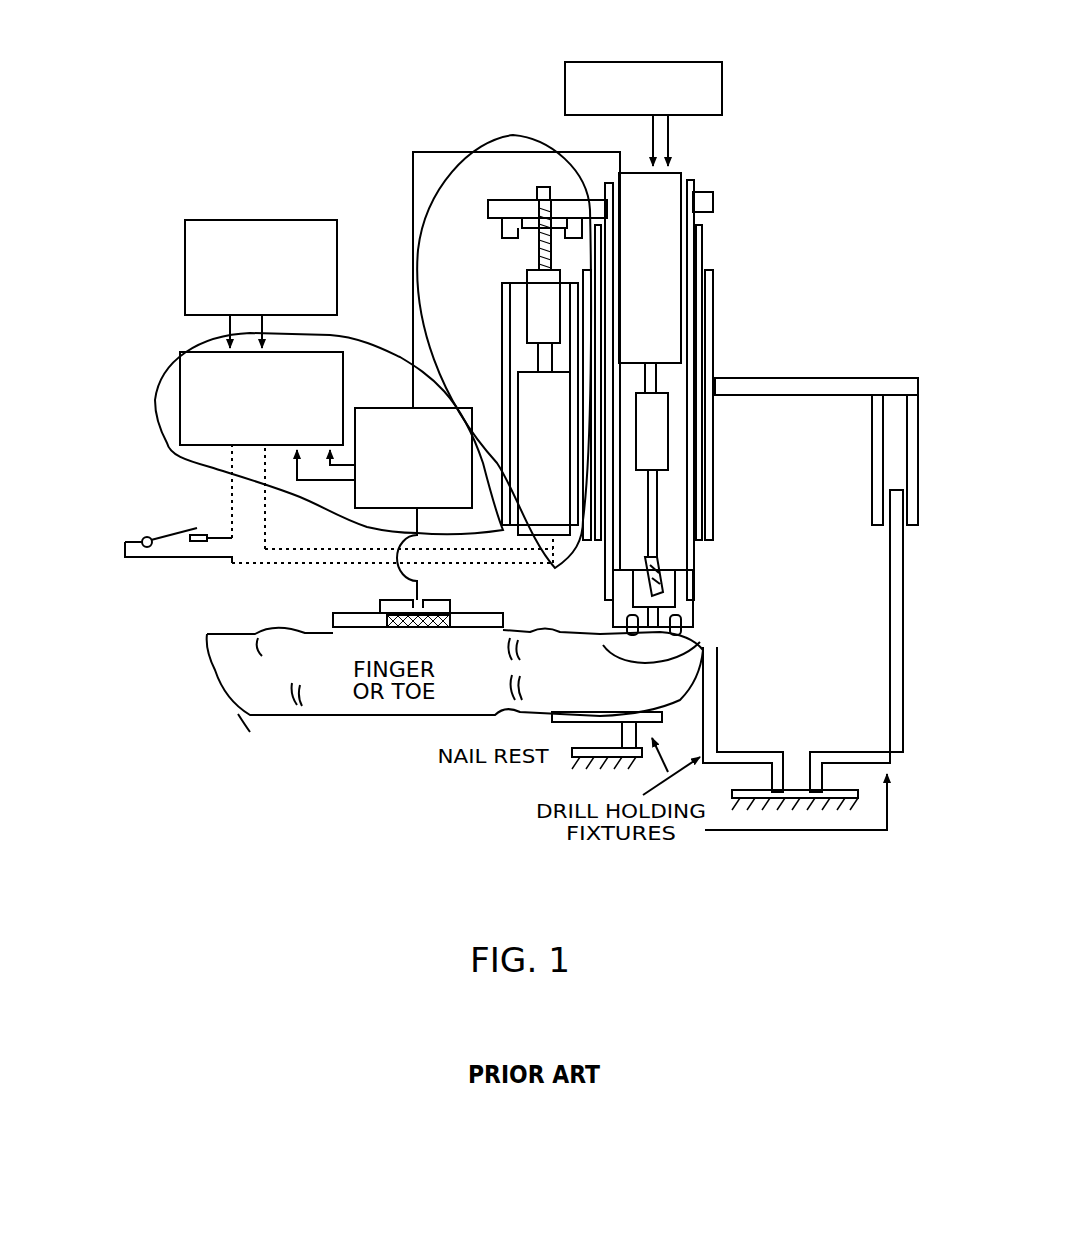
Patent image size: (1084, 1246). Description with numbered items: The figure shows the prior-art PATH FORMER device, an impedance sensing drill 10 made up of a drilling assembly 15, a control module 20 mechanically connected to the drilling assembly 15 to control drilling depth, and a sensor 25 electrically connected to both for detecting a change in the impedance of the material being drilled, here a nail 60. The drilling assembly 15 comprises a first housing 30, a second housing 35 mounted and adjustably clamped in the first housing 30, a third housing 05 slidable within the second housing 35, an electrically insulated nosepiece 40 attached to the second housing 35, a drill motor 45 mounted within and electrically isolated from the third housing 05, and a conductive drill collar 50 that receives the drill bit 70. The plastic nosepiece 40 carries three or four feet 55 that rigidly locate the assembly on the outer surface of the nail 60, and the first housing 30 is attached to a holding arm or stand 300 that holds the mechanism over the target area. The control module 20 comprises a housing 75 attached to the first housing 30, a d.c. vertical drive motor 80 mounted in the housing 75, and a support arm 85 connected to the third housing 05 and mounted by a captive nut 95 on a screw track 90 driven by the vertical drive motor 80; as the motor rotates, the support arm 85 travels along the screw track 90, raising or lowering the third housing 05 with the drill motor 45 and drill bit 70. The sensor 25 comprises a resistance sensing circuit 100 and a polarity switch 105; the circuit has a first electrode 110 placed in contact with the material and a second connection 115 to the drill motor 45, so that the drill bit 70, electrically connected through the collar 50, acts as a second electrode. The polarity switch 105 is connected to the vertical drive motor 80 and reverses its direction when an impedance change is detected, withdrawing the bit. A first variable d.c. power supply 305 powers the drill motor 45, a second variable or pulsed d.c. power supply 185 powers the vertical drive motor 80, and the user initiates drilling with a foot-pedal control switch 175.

The impedance sensing drill 10 is at (442, 70).
The first power supply 305 is at (724, 68).
The second connection 115 is at (582, 150).
The control module 20 is at (472, 148).
The sensor 25 is at (175, 352).
The second power supply 185 is at (187, 258).
The polarity switch 105 is at (330, 350).
The resistance sensing circuit 100 is at (412, 407).
The switch 175 is at (157, 560).
The first electrode 110 is at (360, 613).
The nail 60 is at (625, 655).
The screw track 90 is at (540, 187).
The support arm 85 is at (505, 203).
The captive nut 95 is at (528, 240).
The housing 75 is at (505, 333).
The vertical drive motor 80 is at (557, 511).
The drill motor 45 is at (638, 322).
The drill collar 50 is at (640, 443).
The drill bit 70 is at (656, 567).
The second housing 35 is at (713, 587).
The electrically insulated nosepiece 40 is at (695, 618).
The feet 55 is at (687, 630).
The third housing 05 is at (696, 222).
The drilling assembly 15 is at (785, 299).
The first housing 30 is at (716, 453).
The holding arm 300 is at (888, 497).